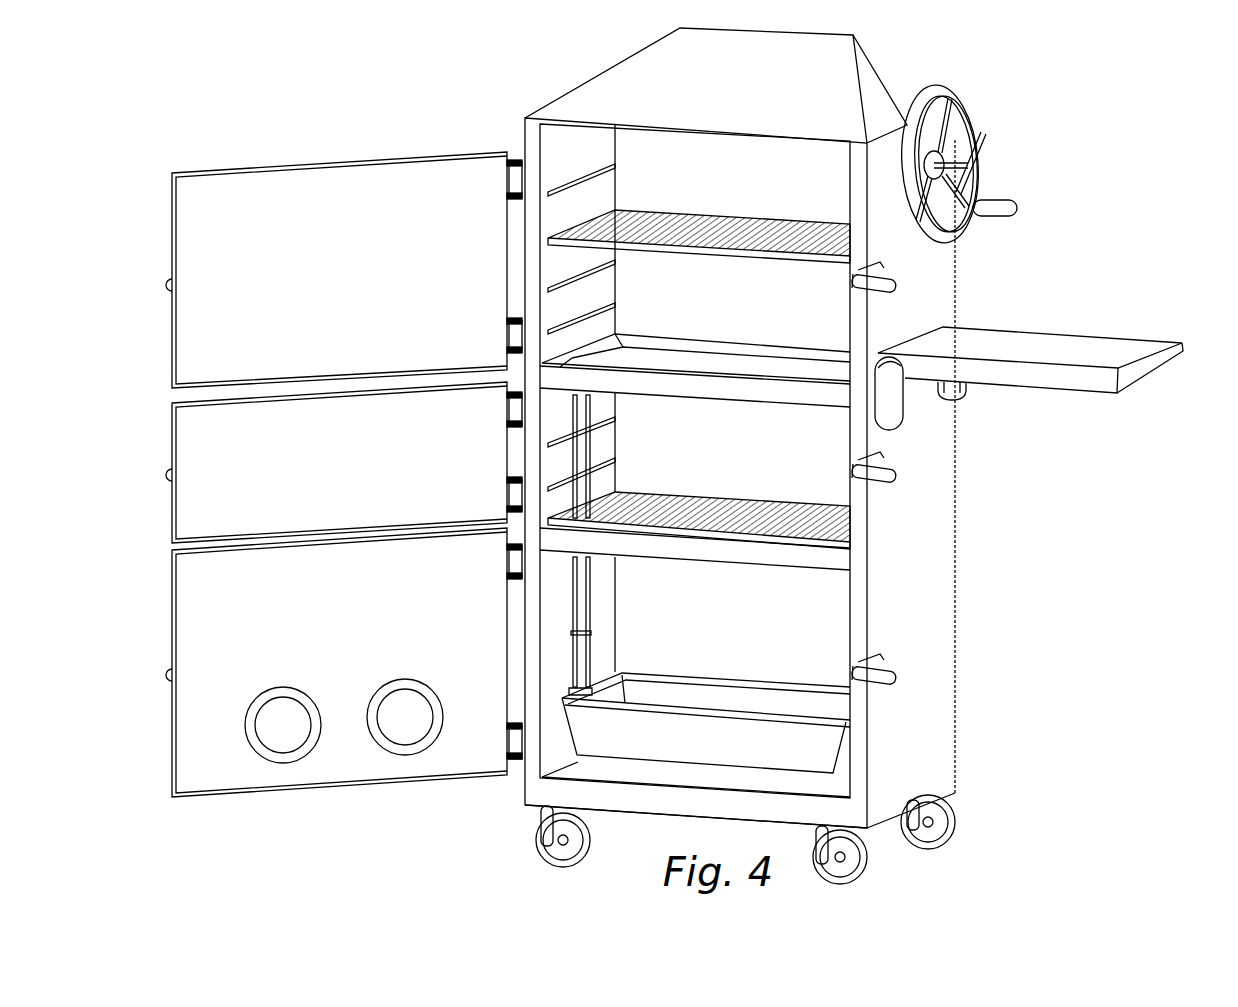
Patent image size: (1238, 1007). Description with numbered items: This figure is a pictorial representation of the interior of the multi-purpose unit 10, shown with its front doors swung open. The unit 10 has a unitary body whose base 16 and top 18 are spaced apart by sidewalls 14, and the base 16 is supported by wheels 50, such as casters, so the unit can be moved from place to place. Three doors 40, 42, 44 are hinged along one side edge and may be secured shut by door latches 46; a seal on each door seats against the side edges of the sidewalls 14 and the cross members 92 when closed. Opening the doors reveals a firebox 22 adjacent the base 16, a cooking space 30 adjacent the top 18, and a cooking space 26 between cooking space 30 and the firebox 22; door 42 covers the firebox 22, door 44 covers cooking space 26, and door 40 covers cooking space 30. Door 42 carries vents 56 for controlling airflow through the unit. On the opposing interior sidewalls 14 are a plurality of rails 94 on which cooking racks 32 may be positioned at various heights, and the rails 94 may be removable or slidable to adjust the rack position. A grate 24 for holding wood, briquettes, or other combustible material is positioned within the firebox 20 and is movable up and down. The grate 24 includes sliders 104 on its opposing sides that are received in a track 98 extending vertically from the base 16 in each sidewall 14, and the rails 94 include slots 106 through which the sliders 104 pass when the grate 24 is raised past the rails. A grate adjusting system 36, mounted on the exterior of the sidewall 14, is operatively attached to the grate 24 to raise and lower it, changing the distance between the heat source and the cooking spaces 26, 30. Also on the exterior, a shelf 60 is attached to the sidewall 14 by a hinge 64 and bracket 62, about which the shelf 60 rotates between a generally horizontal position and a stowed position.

The multi-purpose unit 10 is at (471, 40).
The sidewalls 14 is at (596, 290).
The base 16 is at (665, 815).
The top 18 is at (630, 72).
The firebox 20 is at (737, 637).
The firebox 22 is at (555, 618).
The grate 24 is at (745, 692).
The cooking space 26 is at (555, 458).
The cooking space 30 is at (555, 340).
The cooking rack 32 is at (715, 222).
The grate adjusting system 36 is at (982, 86).
The door 40 is at (217, 318).
The door 42 is at (323, 662).
The door 44 is at (217, 488).
The door latch 46 is at (894, 283).
The wheels 50 is at (542, 848).
The vent 56 is at (300, 700).
The shelf 60 is at (1090, 342).
The bracket 62 is at (892, 417).
The hinge 64 is at (960, 397).
The cross members 92 is at (778, 404).
The rails 94 is at (616, 167).
The track 98 is at (590, 601).
The sliders 104 is at (590, 680).
The slots 106 is at (585, 637).